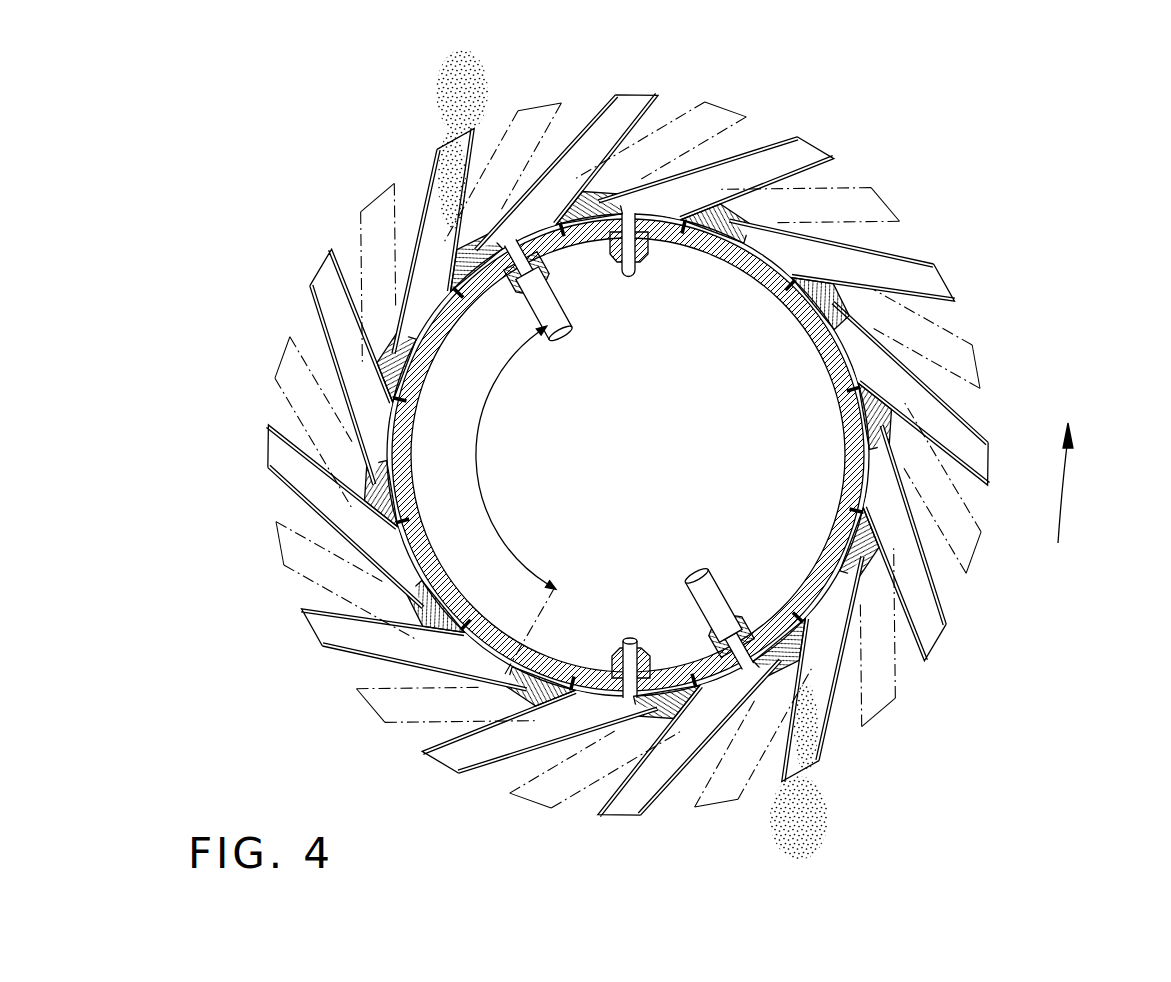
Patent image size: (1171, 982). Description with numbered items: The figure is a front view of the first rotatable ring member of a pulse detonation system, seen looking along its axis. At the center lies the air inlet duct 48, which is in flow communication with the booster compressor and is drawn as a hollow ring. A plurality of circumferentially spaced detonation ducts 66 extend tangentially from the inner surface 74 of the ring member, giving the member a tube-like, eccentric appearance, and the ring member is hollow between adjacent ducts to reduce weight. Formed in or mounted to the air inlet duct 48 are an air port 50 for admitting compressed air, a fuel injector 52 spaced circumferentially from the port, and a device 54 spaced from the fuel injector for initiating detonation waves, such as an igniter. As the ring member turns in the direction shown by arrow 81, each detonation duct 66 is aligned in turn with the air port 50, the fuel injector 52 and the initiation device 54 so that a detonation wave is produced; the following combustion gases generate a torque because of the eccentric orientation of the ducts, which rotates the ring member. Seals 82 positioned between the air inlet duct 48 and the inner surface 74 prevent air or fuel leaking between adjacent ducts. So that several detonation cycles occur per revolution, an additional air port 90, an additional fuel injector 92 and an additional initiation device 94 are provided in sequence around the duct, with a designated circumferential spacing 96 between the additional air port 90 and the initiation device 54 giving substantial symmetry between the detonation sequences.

The air inlet duct 48 is at (428, 372).
The port 50 is at (773, 282).
The fuel injector 52 is at (614, 283).
The device for initiating detonation waves 54 is at (565, 338).
The detonation duct 66 is at (435, 178).
The inner surface 74 is at (438, 338).
The arrow 81 is at (1065, 512).
The seal 82 is at (403, 402).
The additional air port 90 is at (497, 630).
The additional fuel injector 92 is at (660, 606).
The additional device for initiating detonation waves 94 is at (697, 568).
The circumferential spacing 96 is at (480, 452).